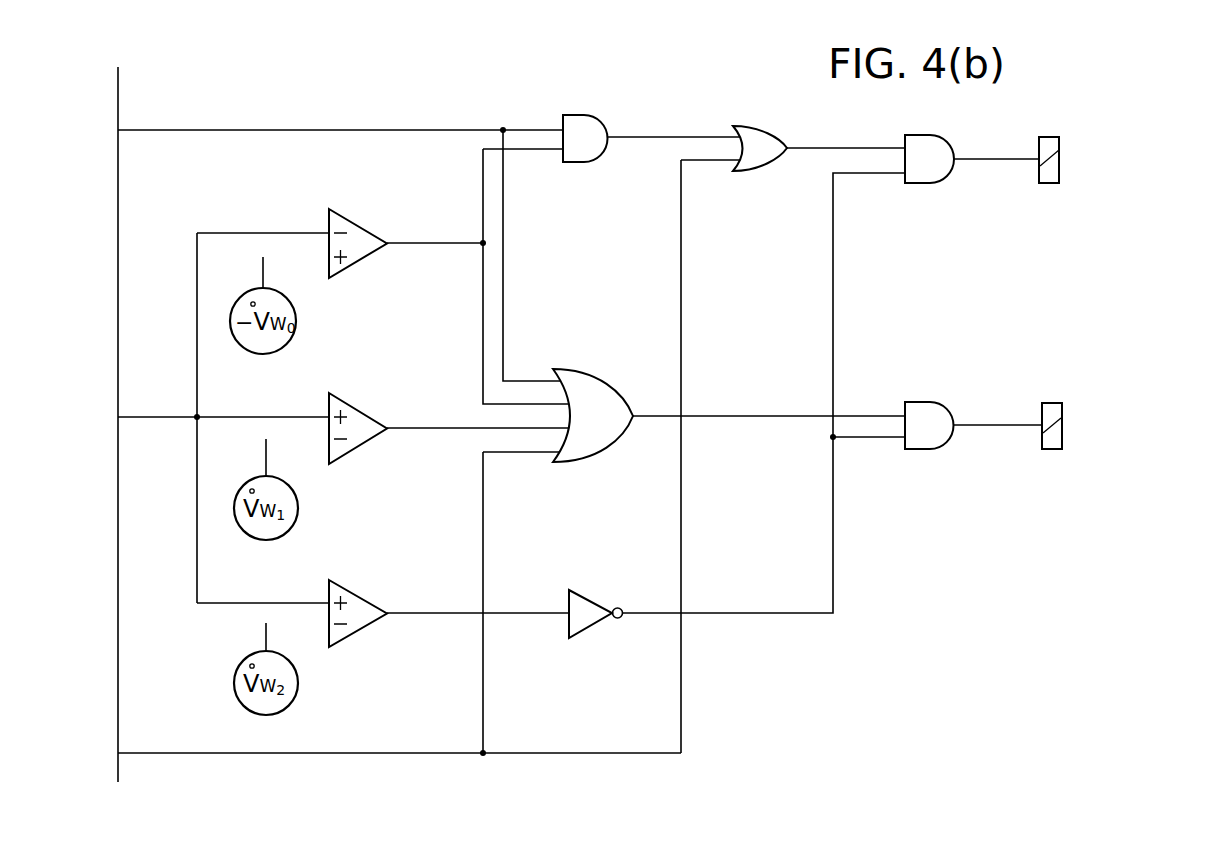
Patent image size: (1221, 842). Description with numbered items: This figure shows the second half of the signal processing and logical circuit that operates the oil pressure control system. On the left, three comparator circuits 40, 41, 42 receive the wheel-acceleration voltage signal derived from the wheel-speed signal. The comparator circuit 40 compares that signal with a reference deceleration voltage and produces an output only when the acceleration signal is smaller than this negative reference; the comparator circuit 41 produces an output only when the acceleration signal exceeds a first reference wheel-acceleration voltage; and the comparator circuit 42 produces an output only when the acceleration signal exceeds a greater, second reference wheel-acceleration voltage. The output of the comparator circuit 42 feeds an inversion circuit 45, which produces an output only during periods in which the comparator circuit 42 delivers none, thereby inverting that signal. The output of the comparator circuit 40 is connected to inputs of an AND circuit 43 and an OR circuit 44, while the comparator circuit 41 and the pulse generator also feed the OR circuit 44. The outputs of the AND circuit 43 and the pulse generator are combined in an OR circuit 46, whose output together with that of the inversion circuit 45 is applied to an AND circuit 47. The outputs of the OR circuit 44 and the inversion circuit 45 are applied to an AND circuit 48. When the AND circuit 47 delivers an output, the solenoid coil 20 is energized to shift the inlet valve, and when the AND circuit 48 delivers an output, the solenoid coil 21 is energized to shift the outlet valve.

The solenoid coil 20 is at (1060, 141).
The solenoid coil 21 is at (1052, 403).
The comparator circuit 40 is at (360, 263).
The comparator circuit 41 is at (360, 450).
The comparator circuit 42 is at (358, 588).
The AND circuit 43 is at (577, 163).
The OR circuit 44 is at (606, 376).
The inversion circuit 45 is at (593, 601).
The OR circuit 46 is at (757, 126).
The AND circuit 47 is at (953, 172).
The AND circuit 48 is at (926, 401).